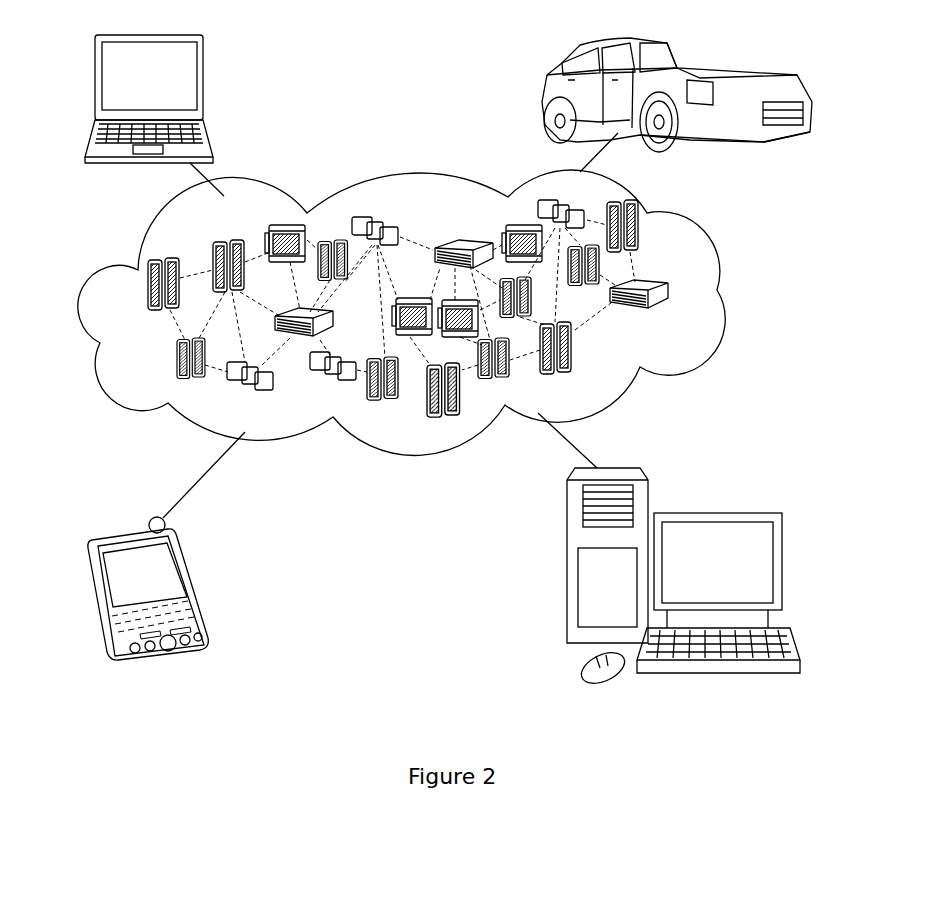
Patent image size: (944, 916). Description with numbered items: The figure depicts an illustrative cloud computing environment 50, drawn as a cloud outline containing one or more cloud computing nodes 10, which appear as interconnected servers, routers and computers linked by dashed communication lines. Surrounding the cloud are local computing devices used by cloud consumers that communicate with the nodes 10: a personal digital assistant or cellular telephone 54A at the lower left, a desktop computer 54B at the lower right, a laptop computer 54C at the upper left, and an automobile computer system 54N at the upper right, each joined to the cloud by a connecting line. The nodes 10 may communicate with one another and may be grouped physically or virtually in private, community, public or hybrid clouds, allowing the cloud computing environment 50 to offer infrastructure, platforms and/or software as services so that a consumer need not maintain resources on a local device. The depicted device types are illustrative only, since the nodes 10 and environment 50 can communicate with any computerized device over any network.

The cloud computing node 10 is at (674, 315).
The cloud computing environment 50 is at (718, 293).
The personal digital assistant or cellular telephone 54A is at (195, 583).
The desktop computer 54B is at (715, 512).
The laptop computer 54C is at (203, 82).
The automobile computer system 54N is at (547, 98).